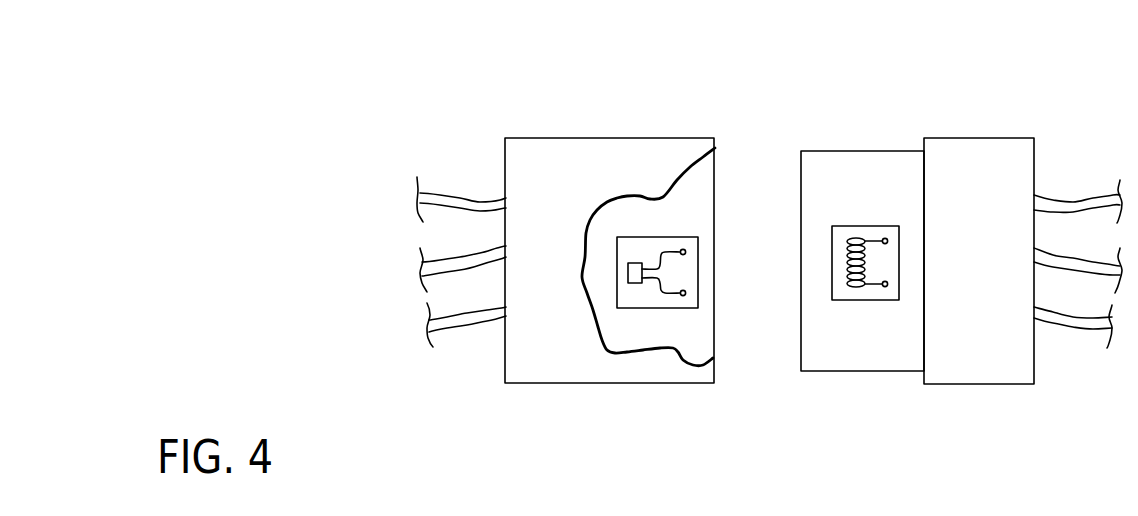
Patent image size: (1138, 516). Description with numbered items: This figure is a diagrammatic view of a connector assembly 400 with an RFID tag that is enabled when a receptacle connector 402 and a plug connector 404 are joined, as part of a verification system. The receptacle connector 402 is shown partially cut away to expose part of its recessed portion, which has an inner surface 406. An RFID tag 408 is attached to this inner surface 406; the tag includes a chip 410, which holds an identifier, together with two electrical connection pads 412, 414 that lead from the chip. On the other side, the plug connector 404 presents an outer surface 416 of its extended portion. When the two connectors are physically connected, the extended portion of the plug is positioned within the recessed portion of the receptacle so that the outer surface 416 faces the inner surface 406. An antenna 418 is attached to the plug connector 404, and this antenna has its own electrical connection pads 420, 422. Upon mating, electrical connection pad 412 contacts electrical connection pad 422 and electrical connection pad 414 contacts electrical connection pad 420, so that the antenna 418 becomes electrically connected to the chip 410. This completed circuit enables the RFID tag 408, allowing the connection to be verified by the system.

The connector assembly 400 is at (962, 89).
The receptacle connector 402 is at (605, 138).
The plug connector 404 is at (990, 137).
The inner surface 406 is at (690, 338).
The RFID tag 408 is at (647, 298).
The chip 410 is at (627, 277).
The electrical connection pad 412 is at (686, 252).
The electrical connection pad 414 is at (686, 293).
The outer surface 416 is at (829, 161).
The antenna 418 is at (852, 292).
The electrical connection pad 420 is at (885, 238).
The electrical connection pad 422 is at (885, 286).